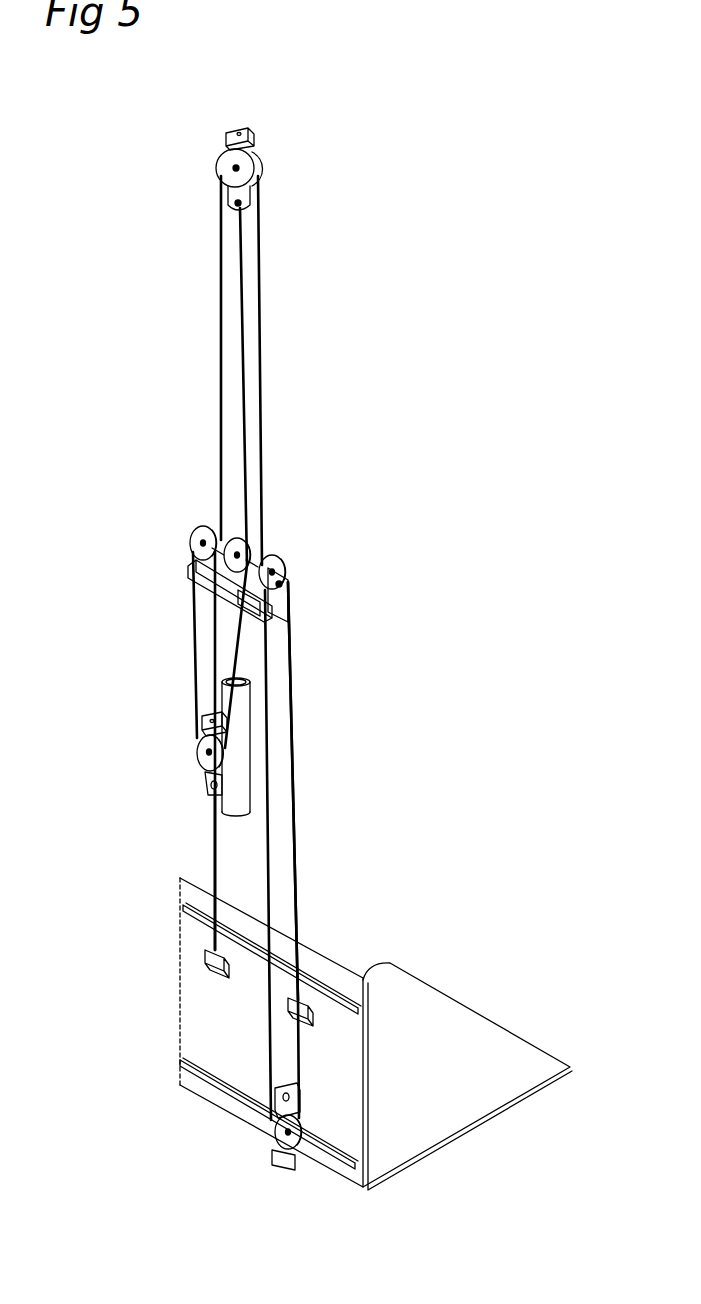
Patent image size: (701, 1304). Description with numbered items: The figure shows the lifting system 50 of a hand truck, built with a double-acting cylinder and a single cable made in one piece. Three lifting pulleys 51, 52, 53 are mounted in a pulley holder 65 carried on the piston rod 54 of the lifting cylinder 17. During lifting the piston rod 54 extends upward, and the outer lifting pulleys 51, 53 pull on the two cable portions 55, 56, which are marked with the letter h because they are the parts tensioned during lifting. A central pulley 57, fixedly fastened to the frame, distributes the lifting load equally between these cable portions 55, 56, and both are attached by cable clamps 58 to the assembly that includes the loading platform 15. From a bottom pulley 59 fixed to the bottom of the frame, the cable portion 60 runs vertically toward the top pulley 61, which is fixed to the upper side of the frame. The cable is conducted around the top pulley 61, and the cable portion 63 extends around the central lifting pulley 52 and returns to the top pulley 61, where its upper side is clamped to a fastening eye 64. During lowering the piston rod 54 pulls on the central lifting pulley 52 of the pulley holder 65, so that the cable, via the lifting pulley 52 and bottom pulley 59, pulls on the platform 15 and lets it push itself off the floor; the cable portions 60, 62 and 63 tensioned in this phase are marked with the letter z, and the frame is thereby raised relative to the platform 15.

The loading platform 15 is at (445, 1015).
The lifting cylinder 17 is at (245, 702).
The lifting system 50 is at (417, 455).
The lifting pulley 51 is at (200, 537).
The central lifting pulley 52 is at (242, 552).
The lifting pulley 53 is at (278, 575).
The piston rod 54 is at (240, 648).
The cable portion 55 is at (215, 848).
The cable portion 56 is at (296, 810).
The central pulley 57 is at (200, 755).
The cable clamps 58 is at (300, 1010).
The bottom pulley 59 is at (275, 1138).
The cable portion 60 is at (270, 887).
The top pulley 61 is at (262, 162).
The cable portion 62 is at (222, 420).
The cable portion 63 is at (242, 352).
The fastening eye 64 is at (232, 203).
The pulley holder 65 is at (280, 607).
The cable portions tensioned during lifting h is at (193, 645).
The cable portions tensioned during lowering z is at (260, 310).